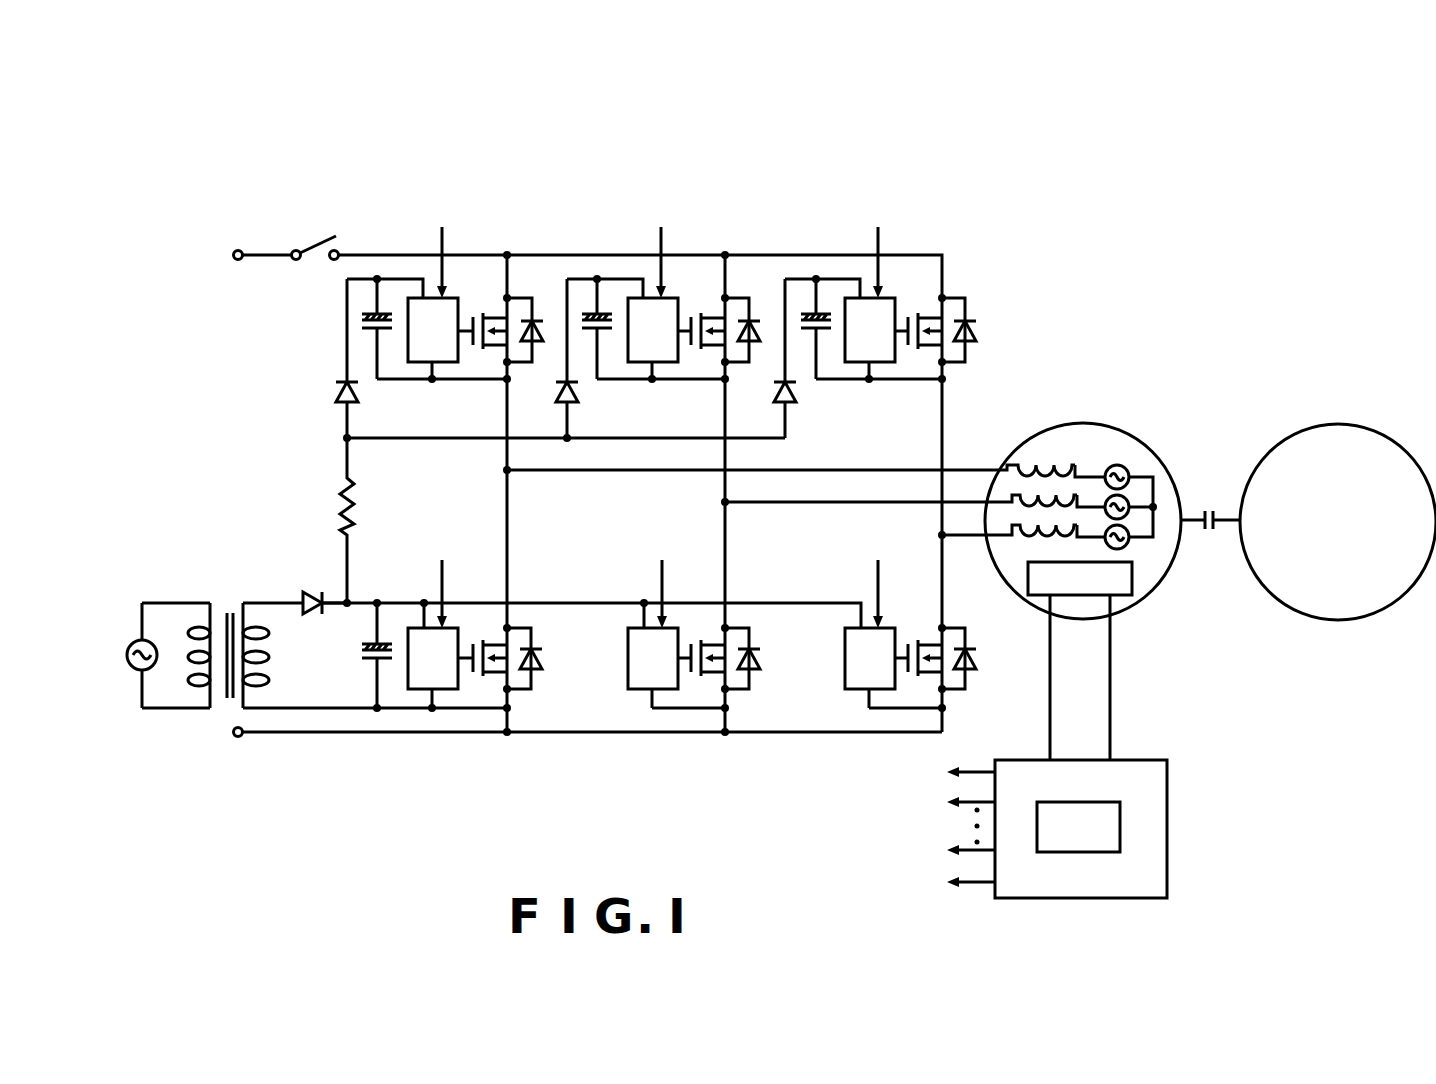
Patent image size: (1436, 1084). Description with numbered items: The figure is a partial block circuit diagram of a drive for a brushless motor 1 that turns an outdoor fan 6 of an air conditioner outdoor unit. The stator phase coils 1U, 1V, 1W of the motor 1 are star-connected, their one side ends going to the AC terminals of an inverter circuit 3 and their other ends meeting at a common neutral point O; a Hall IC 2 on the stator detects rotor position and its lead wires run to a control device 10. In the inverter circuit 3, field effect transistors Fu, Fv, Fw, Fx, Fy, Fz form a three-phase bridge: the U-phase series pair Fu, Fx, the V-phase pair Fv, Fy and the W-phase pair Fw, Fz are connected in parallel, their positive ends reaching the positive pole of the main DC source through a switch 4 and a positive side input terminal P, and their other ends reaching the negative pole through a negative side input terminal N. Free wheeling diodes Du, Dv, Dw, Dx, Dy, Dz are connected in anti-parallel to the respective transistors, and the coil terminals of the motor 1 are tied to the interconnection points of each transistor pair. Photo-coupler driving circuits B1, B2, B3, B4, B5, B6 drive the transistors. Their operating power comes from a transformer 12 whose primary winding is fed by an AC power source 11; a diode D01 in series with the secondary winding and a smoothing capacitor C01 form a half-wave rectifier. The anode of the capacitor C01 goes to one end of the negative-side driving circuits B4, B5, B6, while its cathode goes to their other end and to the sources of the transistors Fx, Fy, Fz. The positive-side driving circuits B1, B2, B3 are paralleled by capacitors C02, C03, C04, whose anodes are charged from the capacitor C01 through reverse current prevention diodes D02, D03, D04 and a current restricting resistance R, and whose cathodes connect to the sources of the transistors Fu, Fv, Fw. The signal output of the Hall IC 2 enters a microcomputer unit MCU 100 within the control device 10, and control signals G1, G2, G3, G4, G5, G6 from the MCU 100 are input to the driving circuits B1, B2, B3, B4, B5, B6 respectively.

The brushless motor 1 is at (844, 571).
The Hall IC 2 is at (1135, 596).
The inverter circuit 3 is at (723, 200).
The switch 4 is at (316, 243).
The outdoor fan 6 is at (1372, 426).
The control device 10 is at (1039, 857).
The microcomputer unit (MCU) 100 is at (1096, 802).
The AC power source 11 is at (146, 626).
The transformer 12 is at (230, 611).
The U-phase coil 1U is at (1006, 467).
The V-phase coil 1V is at (1073, 492).
The W-phase coil 1W is at (1020, 539).
The positive side input terminal P is at (246, 256).
The negative side input terminal N is at (574, 734).
The neutral point O is at (1163, 519).
The resistance R is at (354, 504).
The diode D01 is at (302, 592).
The diode for reverse current prevention D02 is at (357, 400).
The diode for reverse current prevention D03 is at (577, 400).
The diode for reverse current prevention D04 is at (795, 400).
The smoothing capacitor C01 is at (365, 656).
The capacitor C02 is at (384, 295).
The capacitor C03 is at (604, 295).
The capacitor C04 is at (823, 295).
The driving circuit B1 is at (456, 365).
The driving circuit B2 is at (676, 365).
The driving circuit B3 is at (891, 365).
The driving circuit B4 is at (452, 695).
The driving circuit B5 is at (641, 693).
The driving circuit B6 is at (860, 695).
The field effect transistor Fu is at (479, 297).
The field effect transistor Fv is at (697, 297).
The field effect transistor Fw is at (914, 297).
The field effect transistor Fx is at (472, 638).
The field effect transistor Fy is at (691, 637).
The field effect transistor Fz is at (906, 641).
The free wheeling diode Du is at (540, 321).
The free wheeling diode Dv is at (758, 321).
The free wheeling diode Dw is at (976, 321).
The free wheeling diode Dx is at (542, 658).
The free wheeling diode Dy is at (760, 659).
The free wheeling diode Dz is at (976, 660).
The control signal G1 is at (445, 247).
The control signal G2 is at (664, 247).
The control signal G3 is at (881, 247).
The control signal G4 is at (444, 580).
The control signal G5 is at (664, 580).
The control signal G6 is at (881, 582).